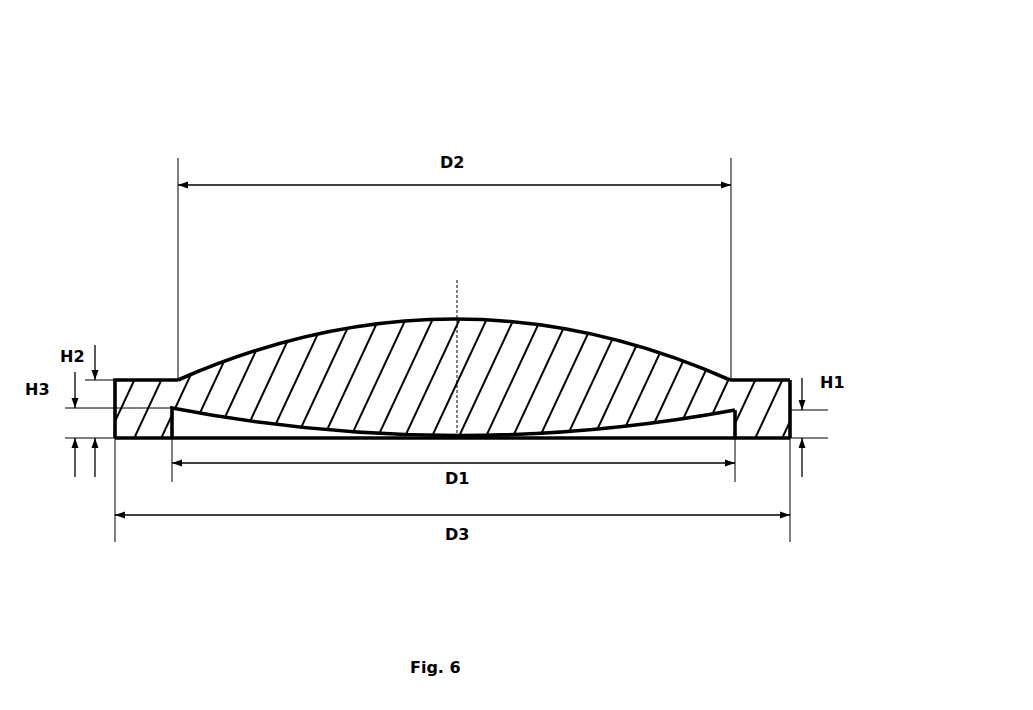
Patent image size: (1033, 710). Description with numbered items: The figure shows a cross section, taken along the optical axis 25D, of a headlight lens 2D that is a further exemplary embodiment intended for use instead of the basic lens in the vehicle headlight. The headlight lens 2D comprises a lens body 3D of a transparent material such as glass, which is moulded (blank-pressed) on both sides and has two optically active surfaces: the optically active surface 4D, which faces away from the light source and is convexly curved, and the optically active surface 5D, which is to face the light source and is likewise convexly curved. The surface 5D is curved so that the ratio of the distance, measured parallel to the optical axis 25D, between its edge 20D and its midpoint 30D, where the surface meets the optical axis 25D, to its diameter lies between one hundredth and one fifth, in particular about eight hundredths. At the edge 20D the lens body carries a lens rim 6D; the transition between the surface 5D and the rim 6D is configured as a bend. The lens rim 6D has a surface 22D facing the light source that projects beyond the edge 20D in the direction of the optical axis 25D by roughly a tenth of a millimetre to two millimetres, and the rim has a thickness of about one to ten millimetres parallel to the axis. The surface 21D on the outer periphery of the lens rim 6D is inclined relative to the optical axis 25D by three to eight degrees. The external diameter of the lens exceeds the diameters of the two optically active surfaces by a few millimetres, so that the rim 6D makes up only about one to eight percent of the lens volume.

The headlight lens 2D is at (682, 88).
The lens body 3D is at (277, 375).
The optically active surface facing away from the light source 4D is at (347, 325).
The optically active surface that is to face the light source 5D is at (643, 419).
The lens rim 6D is at (773, 402).
The edge of the optically active surface 20D is at (749, 381).
The surface on the outer periphery of the lens rim 21D is at (790, 425).
The surface of the lens rim that is to face the light source 22D is at (750, 440).
The optical axis 25D is at (457, 295).
The midpoint of the optically active surface 30D is at (458, 432).